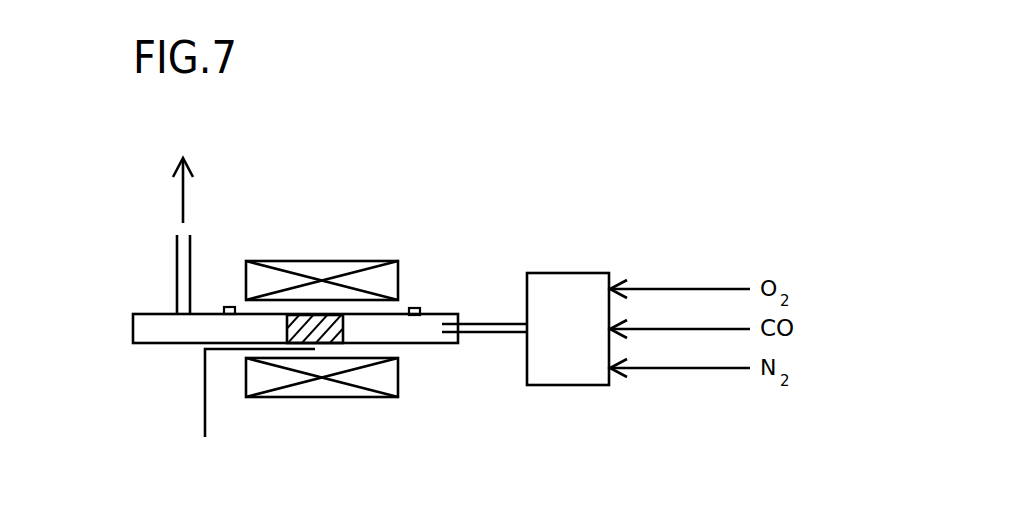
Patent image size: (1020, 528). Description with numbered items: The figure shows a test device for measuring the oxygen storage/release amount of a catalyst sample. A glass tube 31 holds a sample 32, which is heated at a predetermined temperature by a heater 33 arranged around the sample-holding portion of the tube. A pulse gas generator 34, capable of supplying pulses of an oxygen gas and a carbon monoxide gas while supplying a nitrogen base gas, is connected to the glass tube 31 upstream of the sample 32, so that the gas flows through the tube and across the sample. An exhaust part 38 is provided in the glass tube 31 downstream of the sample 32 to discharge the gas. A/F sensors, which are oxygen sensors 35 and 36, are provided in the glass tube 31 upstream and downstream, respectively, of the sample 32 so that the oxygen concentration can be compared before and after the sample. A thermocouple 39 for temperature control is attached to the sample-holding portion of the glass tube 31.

The glass tube 31 is at (447, 315).
The sample 32 is at (308, 314).
The heater 33 is at (320, 397).
The pulse gas generator 34 is at (572, 273).
The A/F sensor 35 is at (414, 307).
The A/F sensor 36 is at (229, 307).
The exhaust part 38 is at (177, 258).
The thermocouple 39 is at (205, 419).